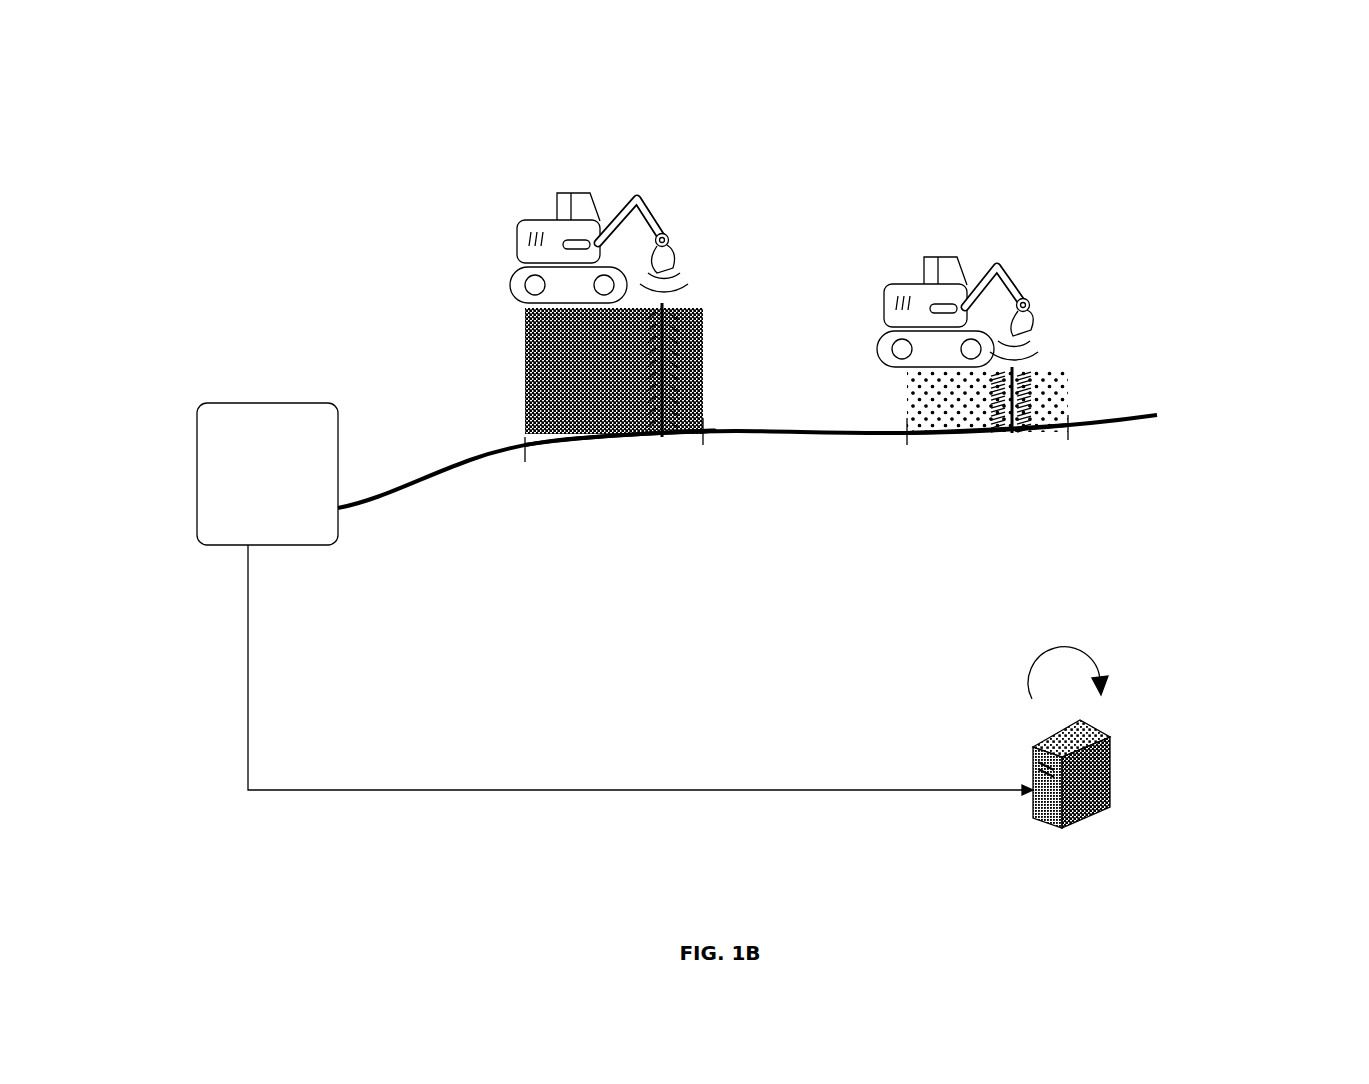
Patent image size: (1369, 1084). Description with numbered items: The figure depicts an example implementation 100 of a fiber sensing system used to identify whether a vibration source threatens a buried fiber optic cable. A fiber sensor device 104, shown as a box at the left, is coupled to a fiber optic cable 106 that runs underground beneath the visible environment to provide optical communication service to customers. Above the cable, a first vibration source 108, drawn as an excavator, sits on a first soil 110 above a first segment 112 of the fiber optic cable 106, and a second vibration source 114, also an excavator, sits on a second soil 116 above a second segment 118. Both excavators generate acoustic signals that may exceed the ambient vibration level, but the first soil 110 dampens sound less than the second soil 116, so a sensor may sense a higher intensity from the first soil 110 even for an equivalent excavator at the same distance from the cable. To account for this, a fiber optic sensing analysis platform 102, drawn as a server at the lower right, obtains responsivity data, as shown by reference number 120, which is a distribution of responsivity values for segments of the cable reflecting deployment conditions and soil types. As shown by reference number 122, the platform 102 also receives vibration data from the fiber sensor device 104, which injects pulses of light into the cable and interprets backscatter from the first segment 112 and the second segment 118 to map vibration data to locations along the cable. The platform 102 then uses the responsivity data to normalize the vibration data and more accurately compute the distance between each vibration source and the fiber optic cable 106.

The example implementation 100 is at (206, 62).
The fiber optic sensing analysis platform 102 is at (1053, 917).
The fiber sensor device 104 is at (249, 527).
The fiber optic cable 106 is at (1155, 416).
The first vibration source 108 is at (519, 222).
The first soil 110 is at (525, 370).
The first segment 112 is at (596, 531).
The second vibration source 114 is at (893, 285).
The second soil 116 is at (905, 400).
The second segment 118 is at (969, 531).
The obtain responsivity data 120 is at (1187, 642).
The receive vibration data 122 is at (623, 742).